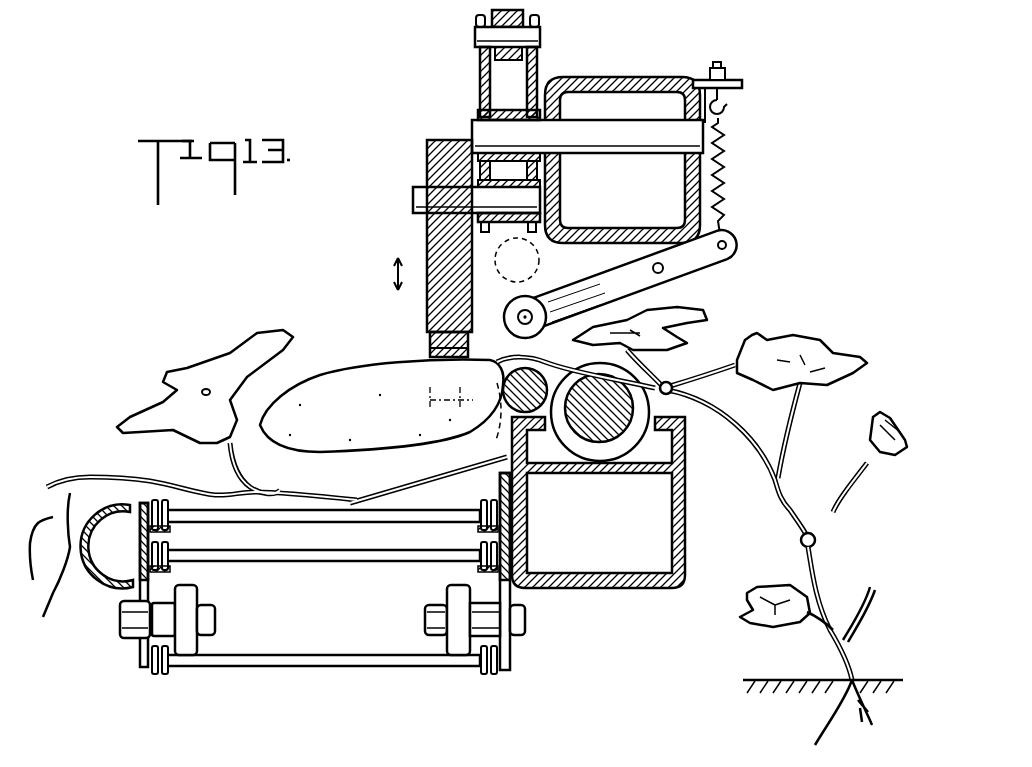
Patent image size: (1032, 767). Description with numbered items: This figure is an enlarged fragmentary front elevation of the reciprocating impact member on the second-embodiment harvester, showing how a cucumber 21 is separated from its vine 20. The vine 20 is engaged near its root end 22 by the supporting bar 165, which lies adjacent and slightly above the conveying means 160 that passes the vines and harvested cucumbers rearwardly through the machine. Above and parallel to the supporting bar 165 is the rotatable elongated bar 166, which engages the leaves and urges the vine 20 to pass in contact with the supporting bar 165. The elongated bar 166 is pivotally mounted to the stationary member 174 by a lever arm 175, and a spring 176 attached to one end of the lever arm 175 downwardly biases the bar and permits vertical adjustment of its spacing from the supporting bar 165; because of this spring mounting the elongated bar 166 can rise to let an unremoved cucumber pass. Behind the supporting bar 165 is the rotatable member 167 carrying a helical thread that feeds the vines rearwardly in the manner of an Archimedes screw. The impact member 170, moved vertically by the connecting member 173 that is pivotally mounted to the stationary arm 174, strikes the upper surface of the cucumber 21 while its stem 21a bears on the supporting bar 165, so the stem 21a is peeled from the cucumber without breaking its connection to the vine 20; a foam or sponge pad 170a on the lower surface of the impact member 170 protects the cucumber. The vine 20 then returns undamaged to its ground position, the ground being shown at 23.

The vine 20 is at (800, 510).
The cucumber 21 is at (340, 378).
The stem 21a is at (497, 370).
The root end 22 is at (850, 670).
The ground 23 is at (750, 680).
The conveying means 160 is at (140, 655).
The supporting bar 165 is at (542, 372).
The elongated bar 166 is at (535, 300).
The rotatable member 167 is at (628, 453).
The impact member 170 is at (425, 240).
The pad 170a is at (430, 340).
The connecting member 173 is at (540, 62).
The stationary arm 174 is at (655, 82).
The lever arm 175 is at (725, 253).
The spring 176 is at (725, 160).